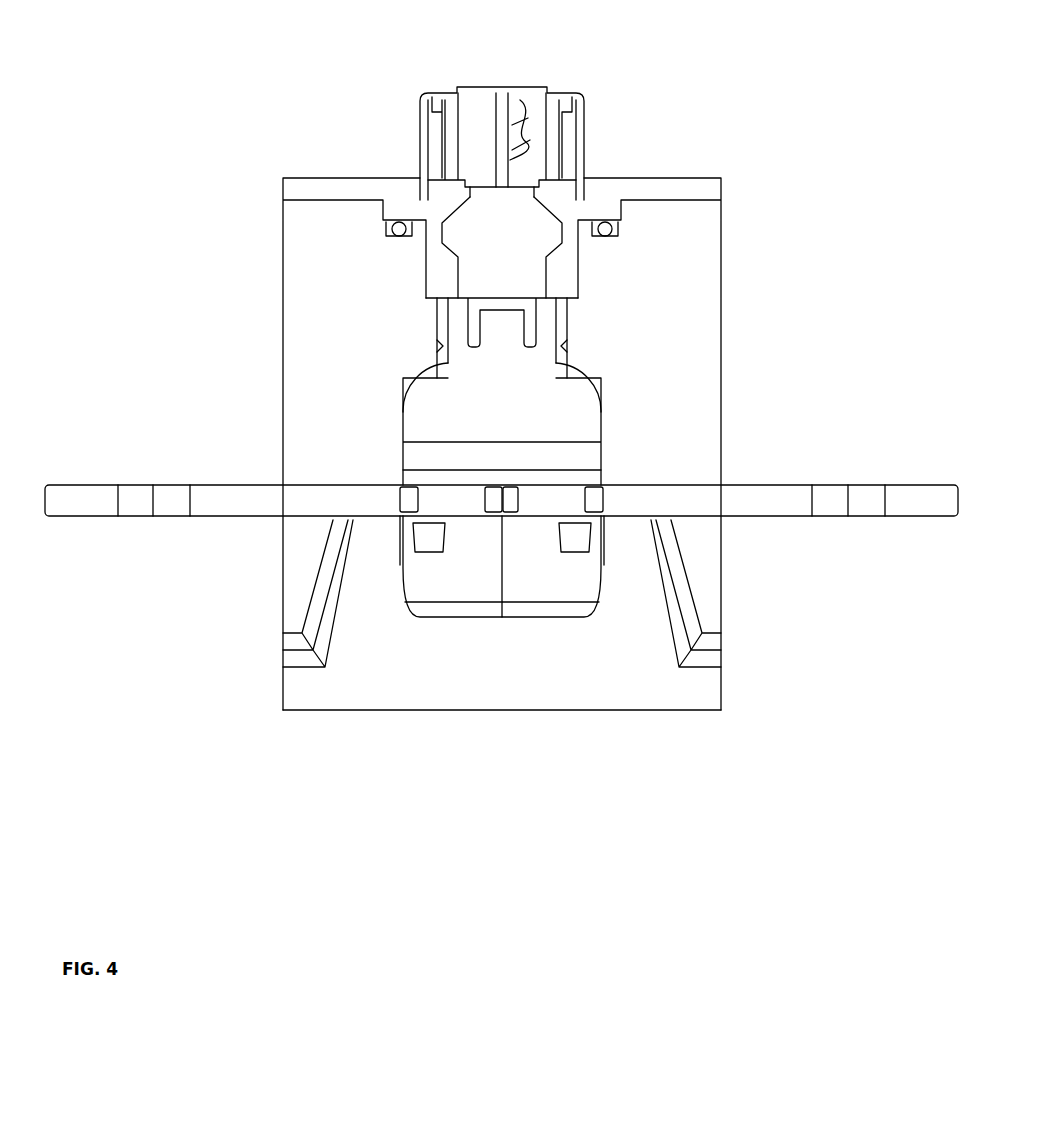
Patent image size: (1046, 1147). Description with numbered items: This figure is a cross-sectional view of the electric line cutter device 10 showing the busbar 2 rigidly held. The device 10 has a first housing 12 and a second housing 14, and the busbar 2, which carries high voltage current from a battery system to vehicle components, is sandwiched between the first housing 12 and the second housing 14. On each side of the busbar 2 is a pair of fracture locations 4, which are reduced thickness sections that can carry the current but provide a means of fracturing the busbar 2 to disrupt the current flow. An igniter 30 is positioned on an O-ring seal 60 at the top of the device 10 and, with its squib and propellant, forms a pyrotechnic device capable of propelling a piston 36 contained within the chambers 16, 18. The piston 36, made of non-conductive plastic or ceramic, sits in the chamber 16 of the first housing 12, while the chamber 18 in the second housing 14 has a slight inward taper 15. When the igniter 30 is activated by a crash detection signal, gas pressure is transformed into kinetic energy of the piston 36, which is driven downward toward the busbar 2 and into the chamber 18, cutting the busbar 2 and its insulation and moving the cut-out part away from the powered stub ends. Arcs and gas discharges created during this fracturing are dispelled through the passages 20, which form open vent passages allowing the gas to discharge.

The electric line cutter device 10 is at (118, 80).
The first housing 12 is at (300, 302).
The second housing 14 is at (288, 688).
The O-ring seal 60 is at (621, 238).
The igniter 30 is at (502, 88).
The piston 36 is at (550, 410).
The busbar 2 is at (99, 483).
The fracture locations 4 is at (402, 528).
The chamber 16 is at (412, 467).
The chamber 18 is at (463, 573).
The inward taper 15 is at (535, 593).
The passages 20 is at (288, 651).